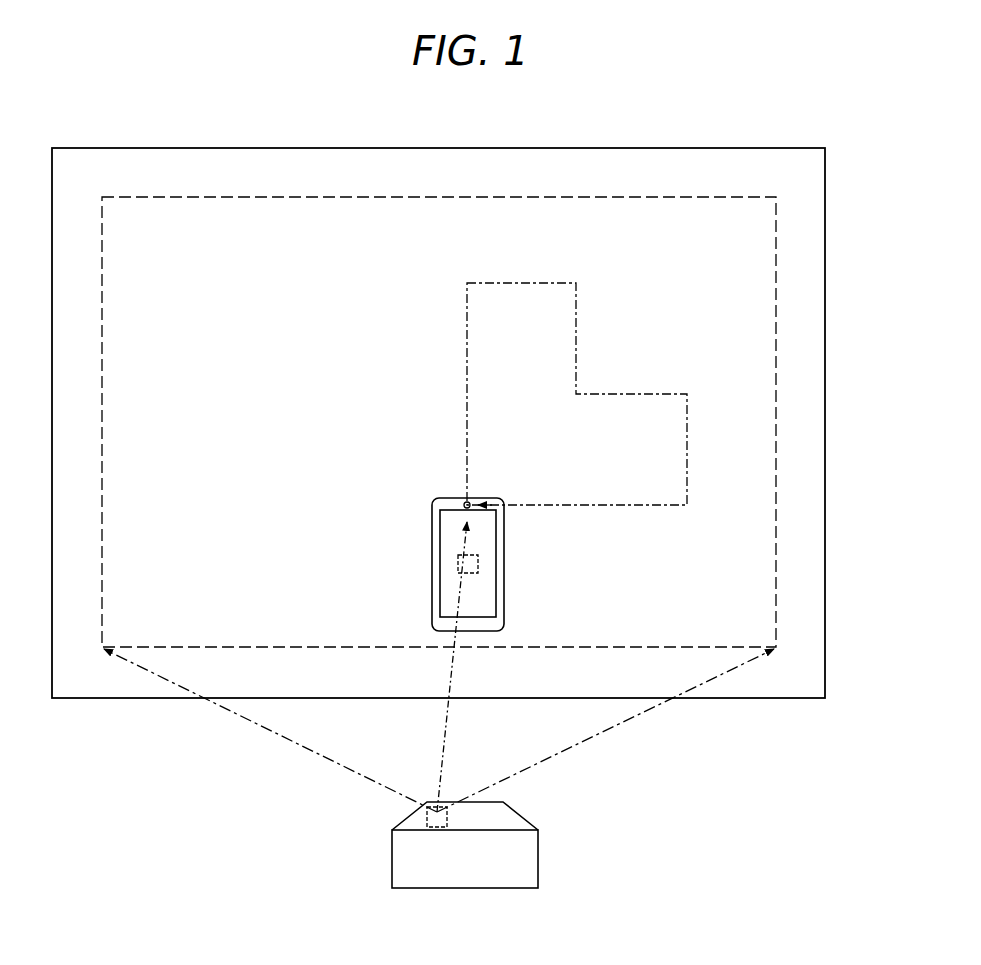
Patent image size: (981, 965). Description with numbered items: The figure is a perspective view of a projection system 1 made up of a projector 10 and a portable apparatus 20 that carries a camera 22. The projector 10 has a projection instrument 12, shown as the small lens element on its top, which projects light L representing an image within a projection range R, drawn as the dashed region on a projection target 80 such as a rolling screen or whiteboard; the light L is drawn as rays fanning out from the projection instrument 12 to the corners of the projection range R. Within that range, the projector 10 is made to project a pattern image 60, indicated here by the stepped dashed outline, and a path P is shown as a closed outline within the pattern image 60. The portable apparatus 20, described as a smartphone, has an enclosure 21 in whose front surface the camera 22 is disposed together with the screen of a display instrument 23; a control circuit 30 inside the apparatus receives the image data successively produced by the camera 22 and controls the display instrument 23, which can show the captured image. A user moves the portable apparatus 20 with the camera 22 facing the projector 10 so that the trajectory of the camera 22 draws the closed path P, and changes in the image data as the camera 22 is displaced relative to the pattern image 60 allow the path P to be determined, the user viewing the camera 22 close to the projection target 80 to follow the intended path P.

The projection system 1 is at (575, 844).
The projector 10 is at (392, 858).
The projection instrument 12 is at (426, 812).
The portable apparatus 20 is at (505, 522).
The enclosure 21 is at (435, 530).
The camera 22 is at (462, 504).
The display instrument 23 is at (498, 600).
The control circuit 30 is at (480, 560).
The pattern image 60 is at (762, 285).
The projection target 80 is at (780, 148).
The light L is at (248, 722).
The path P is at (690, 440).
The projection range R is at (726, 197).